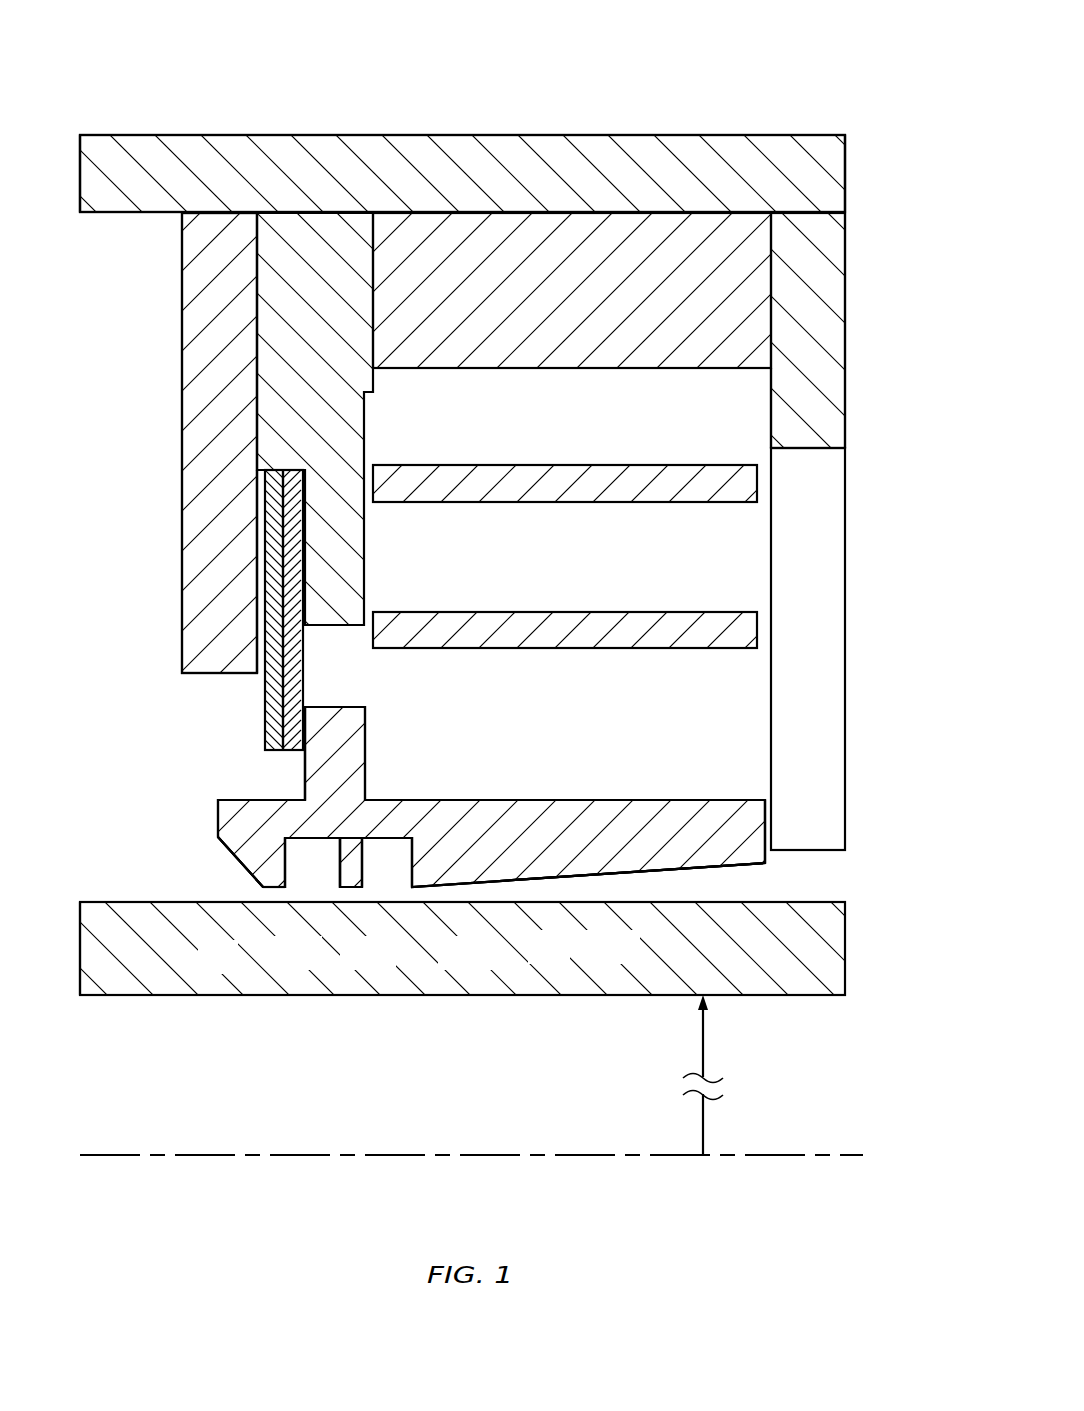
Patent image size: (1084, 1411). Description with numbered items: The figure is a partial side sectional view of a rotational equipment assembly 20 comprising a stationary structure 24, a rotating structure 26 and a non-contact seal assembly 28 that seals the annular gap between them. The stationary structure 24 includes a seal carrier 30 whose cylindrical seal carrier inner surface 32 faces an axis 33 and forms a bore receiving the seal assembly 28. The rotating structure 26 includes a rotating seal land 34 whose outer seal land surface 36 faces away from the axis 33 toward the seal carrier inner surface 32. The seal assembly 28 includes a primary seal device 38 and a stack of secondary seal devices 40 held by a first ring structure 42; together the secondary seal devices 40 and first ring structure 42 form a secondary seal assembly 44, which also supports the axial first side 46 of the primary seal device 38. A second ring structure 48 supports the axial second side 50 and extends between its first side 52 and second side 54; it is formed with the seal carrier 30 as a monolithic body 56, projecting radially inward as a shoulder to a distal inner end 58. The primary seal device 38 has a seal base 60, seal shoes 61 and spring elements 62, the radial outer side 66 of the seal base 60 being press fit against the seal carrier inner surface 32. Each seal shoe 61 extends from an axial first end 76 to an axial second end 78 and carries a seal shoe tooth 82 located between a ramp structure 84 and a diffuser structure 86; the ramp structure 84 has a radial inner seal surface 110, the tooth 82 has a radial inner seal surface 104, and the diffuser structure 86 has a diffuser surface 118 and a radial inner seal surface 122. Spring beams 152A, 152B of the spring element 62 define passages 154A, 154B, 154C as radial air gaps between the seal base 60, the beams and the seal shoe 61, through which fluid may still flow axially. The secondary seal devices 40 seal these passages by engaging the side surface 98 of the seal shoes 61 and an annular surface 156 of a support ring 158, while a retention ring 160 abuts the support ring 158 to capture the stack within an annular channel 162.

The rotational equipment assembly 20 is at (860, 75).
The stationary structure 24 is at (130, 128).
The rotating structure 26 is at (117, 1006).
The seal assembly 28 is at (120, 402).
The seal carrier 30 is at (80, 165).
The seal carrier inner surface 32 is at (117, 214).
The axis 33 is at (850, 1160).
The rotating seal land 34 is at (80, 958).
The outer seal land surface 36 is at (110, 902).
The primary seal device 38 is at (612, 196).
The secondary seal devices 40 is at (273, 685).
The first ring structure 42 is at (160, 332).
The secondary seal assembly 44 is at (122, 738).
The axial first side 46 is at (372, 268).
The second ring structure 48 is at (862, 326).
The axial second side 50 is at (773, 262).
The first side of the second ring structure 52 is at (771, 403).
The second side of the second ring structure 54 is at (845, 372).
The monolithic body 56 is at (862, 172).
The distal inner end 58 is at (825, 852).
The seal base 60 is at (513, 213).
The seal shoes 61 is at (225, 878).
The spring elements 62 is at (760, 668).
The radial outer side of the seal base 66 is at (430, 213).
The axial first end of the seal shoe 76 is at (218, 820).
The axial second end of the seal shoe 78 is at (768, 820).
The seal shoe tooth 82 is at (362, 868).
The ramp structure 84 is at (232, 857).
The diffuser structure 86 is at (520, 885).
The side surface 98 is at (303, 765).
The radial inner seal surface of the seal shoe tooth 104 is at (350, 892).
The radial inner seal surface of the ramp structure 110 is at (283, 892).
The diffuser surface 118 is at (597, 878).
The radial inner seal surface of the diffuser structure 122 is at (432, 892).
The spring beam 152A is at (572, 465).
The spring beam 152B is at (545, 612).
The passage 154A is at (550, 417).
The passage 154B is at (508, 560).
The passage 154C is at (493, 720).
The annular surface 156 is at (300, 593).
The secondary seal device support ring 158 is at (322, 213).
The retention ring 160 is at (222, 213).
The annular channel 162 is at (245, 515).